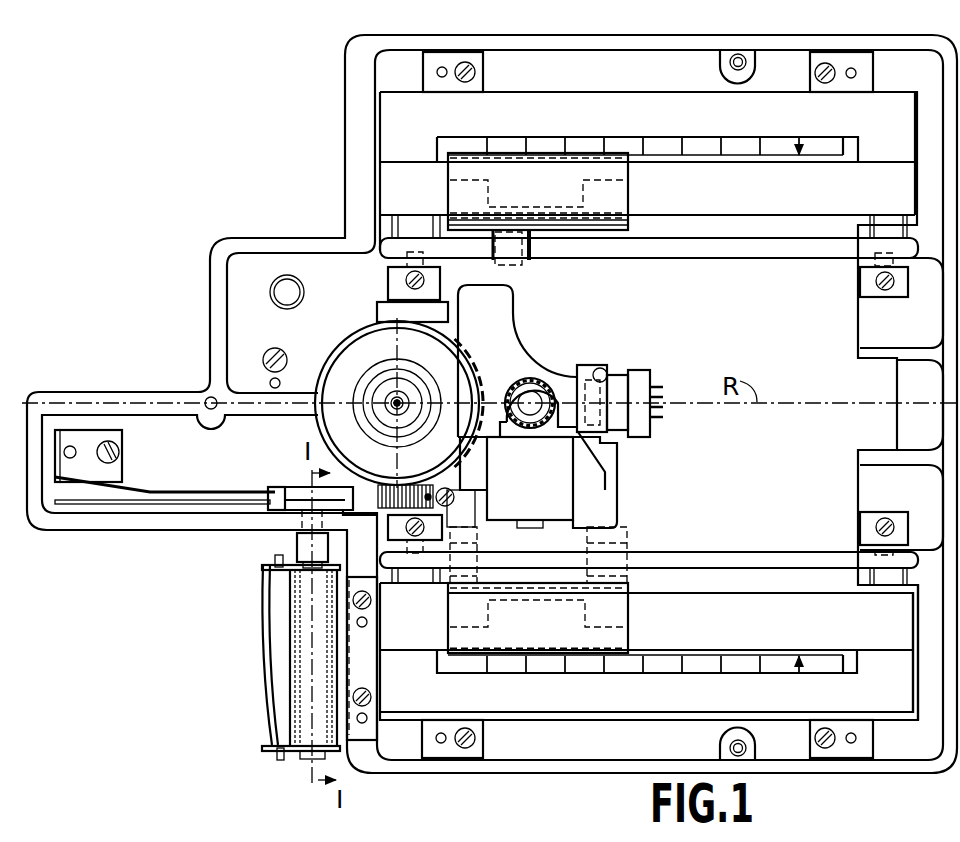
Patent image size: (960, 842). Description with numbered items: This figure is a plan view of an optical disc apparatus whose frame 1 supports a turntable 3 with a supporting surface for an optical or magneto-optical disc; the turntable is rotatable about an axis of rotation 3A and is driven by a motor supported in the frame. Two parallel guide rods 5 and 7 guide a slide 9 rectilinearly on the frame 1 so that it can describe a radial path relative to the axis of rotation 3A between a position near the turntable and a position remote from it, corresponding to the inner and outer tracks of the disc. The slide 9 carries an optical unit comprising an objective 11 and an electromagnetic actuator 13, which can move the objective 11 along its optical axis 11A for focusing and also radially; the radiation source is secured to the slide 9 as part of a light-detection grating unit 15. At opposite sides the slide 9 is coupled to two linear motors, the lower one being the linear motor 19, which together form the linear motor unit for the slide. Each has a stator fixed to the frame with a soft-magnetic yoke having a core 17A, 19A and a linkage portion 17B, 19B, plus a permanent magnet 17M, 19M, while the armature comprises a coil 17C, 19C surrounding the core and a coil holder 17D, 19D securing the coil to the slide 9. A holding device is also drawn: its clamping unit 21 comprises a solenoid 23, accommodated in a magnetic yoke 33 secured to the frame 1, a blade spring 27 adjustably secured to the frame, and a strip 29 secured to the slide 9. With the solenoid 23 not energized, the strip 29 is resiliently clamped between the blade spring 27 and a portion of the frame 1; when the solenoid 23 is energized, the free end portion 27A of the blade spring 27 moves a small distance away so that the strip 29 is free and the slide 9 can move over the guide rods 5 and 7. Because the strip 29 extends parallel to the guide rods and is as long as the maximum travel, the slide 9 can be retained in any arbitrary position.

The frame 1 is at (605, 766).
The turntable 3 is at (342, 368).
The axis of rotation 3A is at (392, 397).
The guide rod 5 is at (743, 554).
The guide rod 7 is at (612, 62).
The slide 9 is at (617, 505).
The objective 11 is at (541, 385).
The optical axis 11A is at (514, 386).
The electromagnetic actuator 13 is at (562, 460).
The light-detection grating unit 15 is at (633, 371).
The core 17A is at (882, 185).
The linkage portion 17B is at (898, 100).
The coil 17C is at (620, 193).
The coil holder 17D is at (620, 230).
The permanent magnet 17M is at (817, 143).
The linear motor 19 is at (543, 738).
The core 19A is at (802, 600).
The linkage portion 19B is at (900, 713).
The coil 19C is at (620, 626).
The coil holder 19D is at (627, 578).
The permanent magnet 19M is at (828, 675).
The clamping unit 21 is at (165, 563).
The solenoid 23 is at (295, 729).
The blade spring 27 is at (152, 490).
The free end portion 27A is at (283, 487).
The strip 29 is at (97, 505).
The magnetic yoke 33 is at (293, 742).